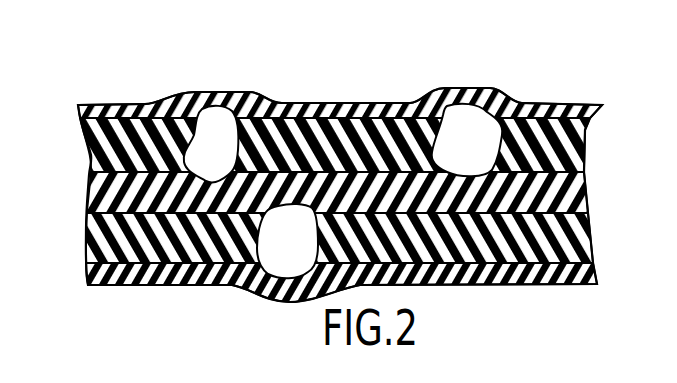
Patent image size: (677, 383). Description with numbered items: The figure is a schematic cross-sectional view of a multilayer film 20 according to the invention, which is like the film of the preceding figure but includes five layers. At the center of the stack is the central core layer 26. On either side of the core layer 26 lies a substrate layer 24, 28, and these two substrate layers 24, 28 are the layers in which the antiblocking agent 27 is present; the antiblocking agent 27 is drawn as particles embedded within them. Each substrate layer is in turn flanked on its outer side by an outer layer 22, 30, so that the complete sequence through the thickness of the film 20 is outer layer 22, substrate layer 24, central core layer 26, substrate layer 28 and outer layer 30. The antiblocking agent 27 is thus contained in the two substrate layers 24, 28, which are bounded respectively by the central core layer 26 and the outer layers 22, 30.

The film 20 is at (513, 78).
The outer layer 22 is at (604, 108).
The substrate layer 24 is at (586, 149).
The central core layer 26 is at (587, 195).
The substrate layer 28 is at (592, 240).
The outer layer 30 is at (597, 275).
The antiblocking agent 27 is at (230, 155).